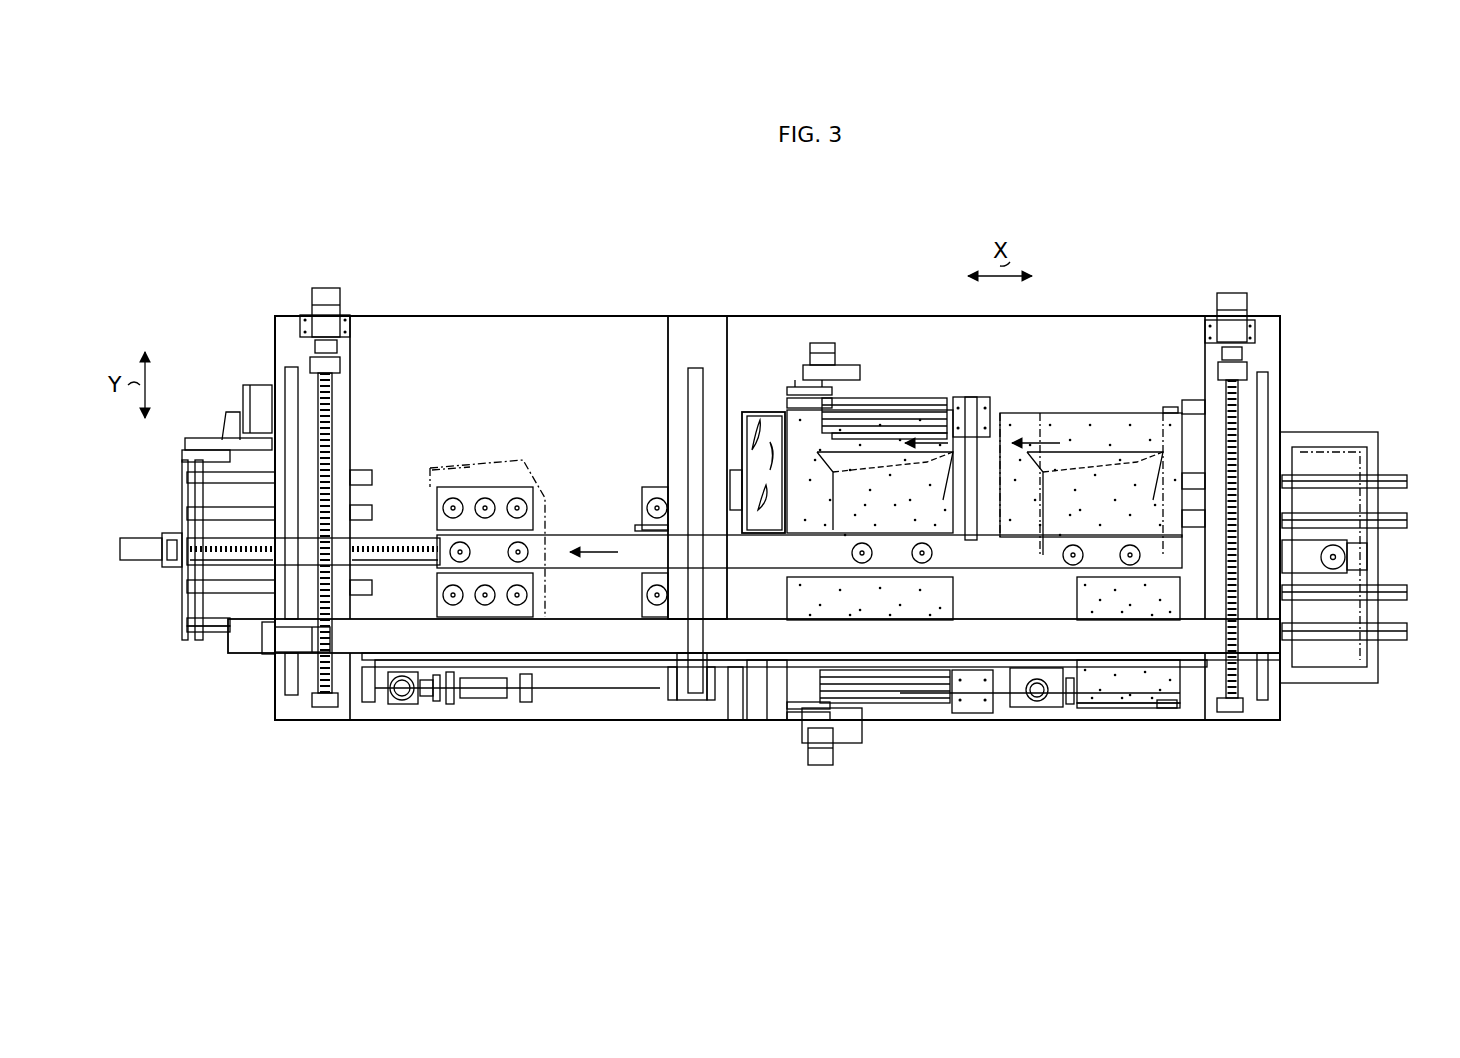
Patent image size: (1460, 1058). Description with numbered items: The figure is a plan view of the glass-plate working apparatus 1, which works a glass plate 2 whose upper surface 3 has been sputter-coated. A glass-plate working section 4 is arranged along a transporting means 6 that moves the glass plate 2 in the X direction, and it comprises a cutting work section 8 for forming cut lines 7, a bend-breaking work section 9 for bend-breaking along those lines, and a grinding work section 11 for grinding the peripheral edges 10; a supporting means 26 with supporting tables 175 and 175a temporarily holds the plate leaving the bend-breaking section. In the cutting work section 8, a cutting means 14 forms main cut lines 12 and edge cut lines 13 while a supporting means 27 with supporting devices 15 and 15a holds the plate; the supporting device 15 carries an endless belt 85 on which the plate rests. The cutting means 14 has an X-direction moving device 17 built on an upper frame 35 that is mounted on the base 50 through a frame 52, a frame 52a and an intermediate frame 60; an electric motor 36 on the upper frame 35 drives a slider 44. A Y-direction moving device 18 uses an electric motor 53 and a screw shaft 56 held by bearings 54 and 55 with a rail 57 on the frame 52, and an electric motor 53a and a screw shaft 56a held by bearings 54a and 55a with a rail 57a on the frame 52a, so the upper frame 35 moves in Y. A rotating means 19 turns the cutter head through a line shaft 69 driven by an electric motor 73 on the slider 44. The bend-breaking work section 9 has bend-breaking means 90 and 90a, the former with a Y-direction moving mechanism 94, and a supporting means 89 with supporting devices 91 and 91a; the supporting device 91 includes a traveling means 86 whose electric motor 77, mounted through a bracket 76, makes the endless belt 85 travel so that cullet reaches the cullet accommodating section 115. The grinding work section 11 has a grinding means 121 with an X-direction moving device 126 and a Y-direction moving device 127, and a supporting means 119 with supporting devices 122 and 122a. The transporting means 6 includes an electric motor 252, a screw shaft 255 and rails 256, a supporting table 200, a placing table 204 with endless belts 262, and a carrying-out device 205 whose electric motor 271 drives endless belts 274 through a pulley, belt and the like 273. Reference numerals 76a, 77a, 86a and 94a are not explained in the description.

The glass-plate working apparatus 1 is at (1280, 267).
The glass plate 2 is at (455, 475).
The upper surface 3 is at (433, 469).
The glass-plate working section 4 is at (1167, 709).
The transporting means 6 is at (170, 538).
The cut lines 7 is at (1104, 449).
The cutting work section 8 is at (1125, 434).
The bend-breaking work section 9 is at (805, 673).
The peripheral edges 10 is at (525, 465).
The grinding work section 11 is at (498, 486).
The main cut lines 12 is at (1077, 445).
The edge cut lines 13 is at (1040, 477).
The cutting means 14 is at (1040, 708).
The supporting device 15 is at (1133, 687).
The supporting device 15a is at (1144, 433).
The X-direction moving device 17 is at (580, 670).
The Y-direction moving device 18 is at (310, 300).
The rotating means 19 is at (735, 697).
The supporting means 26 is at (653, 492).
The supporting means 27 is at (1150, 685).
The upper frame 35 is at (603, 645).
The electric motor 36 is at (290, 640).
The slider 44 is at (372, 705).
The base 50 is at (585, 338).
The frame 52 is at (290, 338).
The frame 52a is at (1275, 332).
The electric motor 53 is at (325, 298).
The electric motor 53a is at (1238, 314).
The bearing 54 is at (338, 366).
The bearing 54a is at (1248, 368).
The bearing 55 is at (325, 708).
The bearing 55a is at (1230, 712).
The screw shaft 56 is at (333, 384).
The screw shaft 56a is at (1238, 390).
The rail 57 is at (290, 377).
The rail 57a is at (1263, 402).
The frame 60 is at (693, 332).
The line shaft 69 is at (668, 697).
The electric motor 73 is at (490, 701).
The bracket 76 is at (850, 730).
The motor mount 76a is at (848, 380).
The electric motor 77 is at (820, 765).
The motor 77a is at (822, 343).
The endless belt 85 is at (1097, 682).
The traveling means 86 is at (806, 750).
The coupling plates 86a is at (835, 395).
The supporting means 89 is at (870, 445).
The bend-breaking means 90 is at (920, 703).
The bend-breaking means 90a is at (900, 408).
The supporting device 91 is at (802, 608).
The supporting device 91a is at (800, 428).
The Y-direction moving mechanism 94 is at (970, 714).
The slide block 94a is at (970, 397).
The cullet accommodating section 115 is at (756, 416).
The supporting means 119 is at (428, 468).
The grinding means 121 is at (402, 707).
The supporting device 122 is at (524, 597).
The supporting device 122a is at (525, 507).
The X-direction moving device 126 is at (560, 657).
The Y-direction moving device 127 is at (302, 318).
The supporting table 175 is at (645, 582).
The supporting table 175a is at (634, 526).
The supporting table 200 is at (1308, 534).
The placing table 204 is at (1360, 670).
The carrying-out device 205 is at (183, 630).
The electric motor 252 is at (150, 558).
The screw shaft 255 is at (398, 548).
The rails 256 is at (398, 564).
The endless belts 262 is at (1395, 480).
The electric motor 271 is at (250, 400).
The pulley, belt and the like 273 is at (194, 440).
The endless belts 274 is at (188, 628).